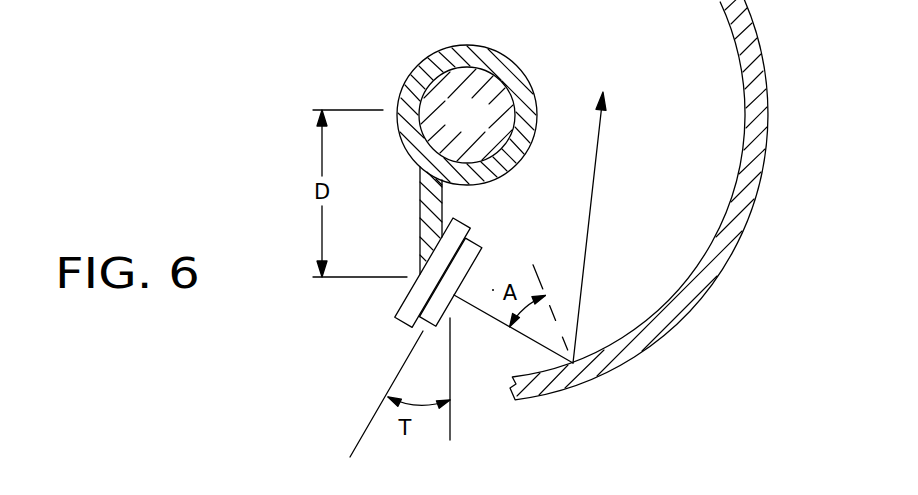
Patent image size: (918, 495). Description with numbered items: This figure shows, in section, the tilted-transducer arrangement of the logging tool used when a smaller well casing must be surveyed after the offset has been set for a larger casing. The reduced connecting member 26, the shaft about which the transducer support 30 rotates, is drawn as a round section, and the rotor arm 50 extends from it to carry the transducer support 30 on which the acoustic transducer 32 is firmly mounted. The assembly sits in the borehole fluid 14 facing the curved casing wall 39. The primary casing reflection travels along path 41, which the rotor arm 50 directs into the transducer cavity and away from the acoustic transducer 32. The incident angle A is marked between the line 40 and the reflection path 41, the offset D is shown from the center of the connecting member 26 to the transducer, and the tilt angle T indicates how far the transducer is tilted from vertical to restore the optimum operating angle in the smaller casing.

The borehole fluid 14 is at (632, 61).
The connecting member 26 is at (455, 129).
The transducer support 30 is at (462, 222).
The acoustic transducer 32 is at (478, 243).
The drum surface 39 is at (767, 97).
The blade tangent line 40 is at (513, 331).
The path 41 is at (587, 287).
The rotor arm 50 is at (418, 232).